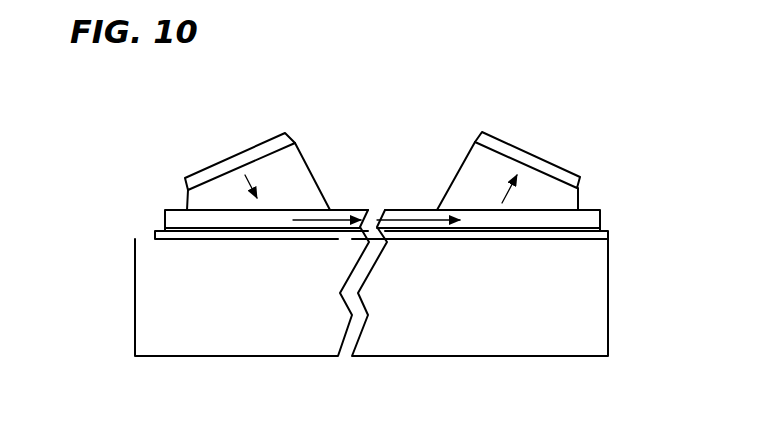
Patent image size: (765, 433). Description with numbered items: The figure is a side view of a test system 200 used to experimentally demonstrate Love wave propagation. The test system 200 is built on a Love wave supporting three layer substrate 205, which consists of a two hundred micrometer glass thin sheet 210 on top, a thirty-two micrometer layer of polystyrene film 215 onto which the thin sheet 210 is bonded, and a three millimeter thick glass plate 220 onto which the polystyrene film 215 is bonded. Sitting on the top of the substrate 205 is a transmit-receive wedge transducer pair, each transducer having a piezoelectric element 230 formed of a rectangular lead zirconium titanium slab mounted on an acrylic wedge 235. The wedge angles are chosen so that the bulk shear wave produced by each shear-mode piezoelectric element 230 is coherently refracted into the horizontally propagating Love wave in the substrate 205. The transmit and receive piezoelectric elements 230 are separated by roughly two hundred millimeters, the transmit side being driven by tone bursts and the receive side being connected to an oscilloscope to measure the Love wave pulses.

The test system 200 is at (125, 82).
The Love wave supporting three layer substrate 205 is at (660, 277).
The glass thin sheet 210 is at (602, 223).
The polystyrene film 215 is at (610, 237).
The glass plate 220 is at (608, 327).
The piezoelectric element 230 is at (190, 174).
The wedge 235 is at (452, 168).